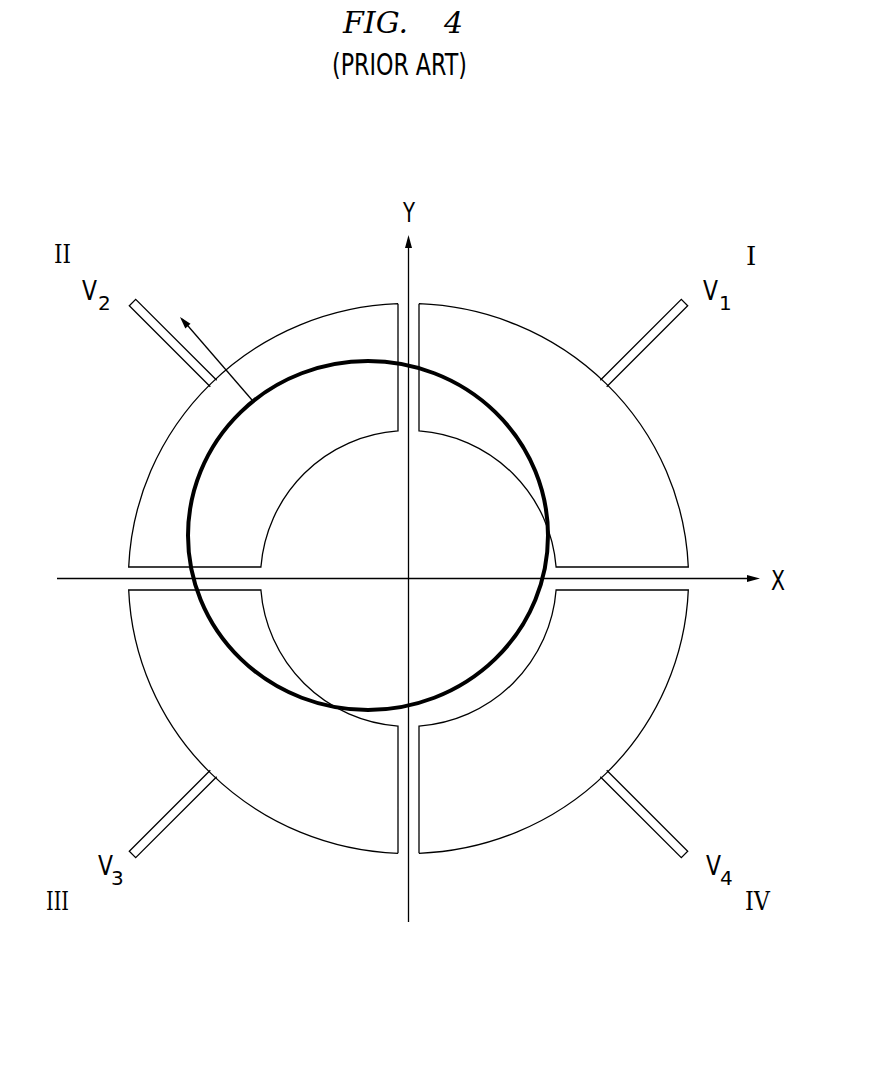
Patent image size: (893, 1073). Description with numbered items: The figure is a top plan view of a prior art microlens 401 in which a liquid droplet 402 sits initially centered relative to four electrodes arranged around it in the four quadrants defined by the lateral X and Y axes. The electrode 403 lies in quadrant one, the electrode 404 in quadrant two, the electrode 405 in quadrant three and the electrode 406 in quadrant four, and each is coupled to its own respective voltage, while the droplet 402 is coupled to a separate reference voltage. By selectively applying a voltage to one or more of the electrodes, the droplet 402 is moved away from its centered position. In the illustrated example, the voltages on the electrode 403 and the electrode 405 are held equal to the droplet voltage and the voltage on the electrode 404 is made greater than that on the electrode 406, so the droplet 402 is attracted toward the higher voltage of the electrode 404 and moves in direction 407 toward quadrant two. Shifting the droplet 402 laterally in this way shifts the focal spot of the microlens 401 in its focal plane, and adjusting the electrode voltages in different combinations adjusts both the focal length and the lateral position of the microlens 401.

The microlens 401 is at (92, 172).
The droplet 402 is at (497, 412).
The electrode 403 is at (663, 458).
The electrode 404 is at (158, 460).
The electrode 405 is at (157, 703).
The electrode 406 is at (663, 703).
The direction of droplet movement 407 is at (203, 343).